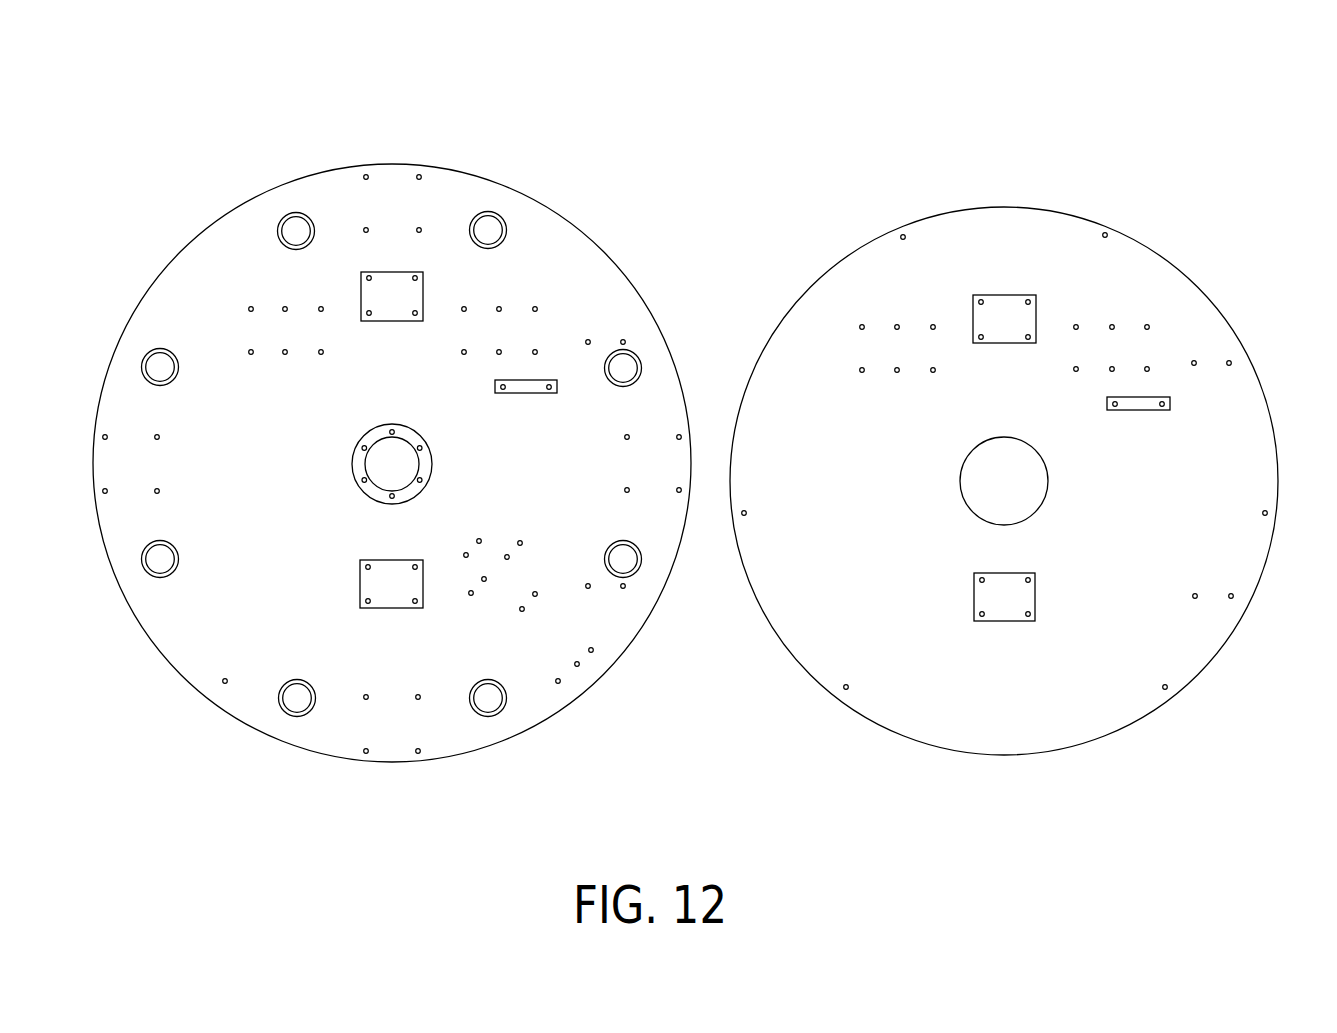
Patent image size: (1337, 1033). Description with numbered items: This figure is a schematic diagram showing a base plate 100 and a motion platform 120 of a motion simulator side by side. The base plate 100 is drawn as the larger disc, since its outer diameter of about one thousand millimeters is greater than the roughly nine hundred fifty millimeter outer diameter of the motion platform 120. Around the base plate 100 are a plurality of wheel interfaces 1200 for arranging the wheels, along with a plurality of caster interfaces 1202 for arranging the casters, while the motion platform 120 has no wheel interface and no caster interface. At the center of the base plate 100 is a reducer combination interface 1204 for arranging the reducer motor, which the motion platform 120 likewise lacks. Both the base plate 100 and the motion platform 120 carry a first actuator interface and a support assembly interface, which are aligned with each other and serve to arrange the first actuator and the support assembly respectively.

The base plate 100 is at (627, 90).
The motion platform 120 is at (1171, 116).
The wheel interfaces 1200 is at (296, 227).
The caster interfaces 1202 is at (393, 180).
The reducer combination interface 1204 is at (399, 453).